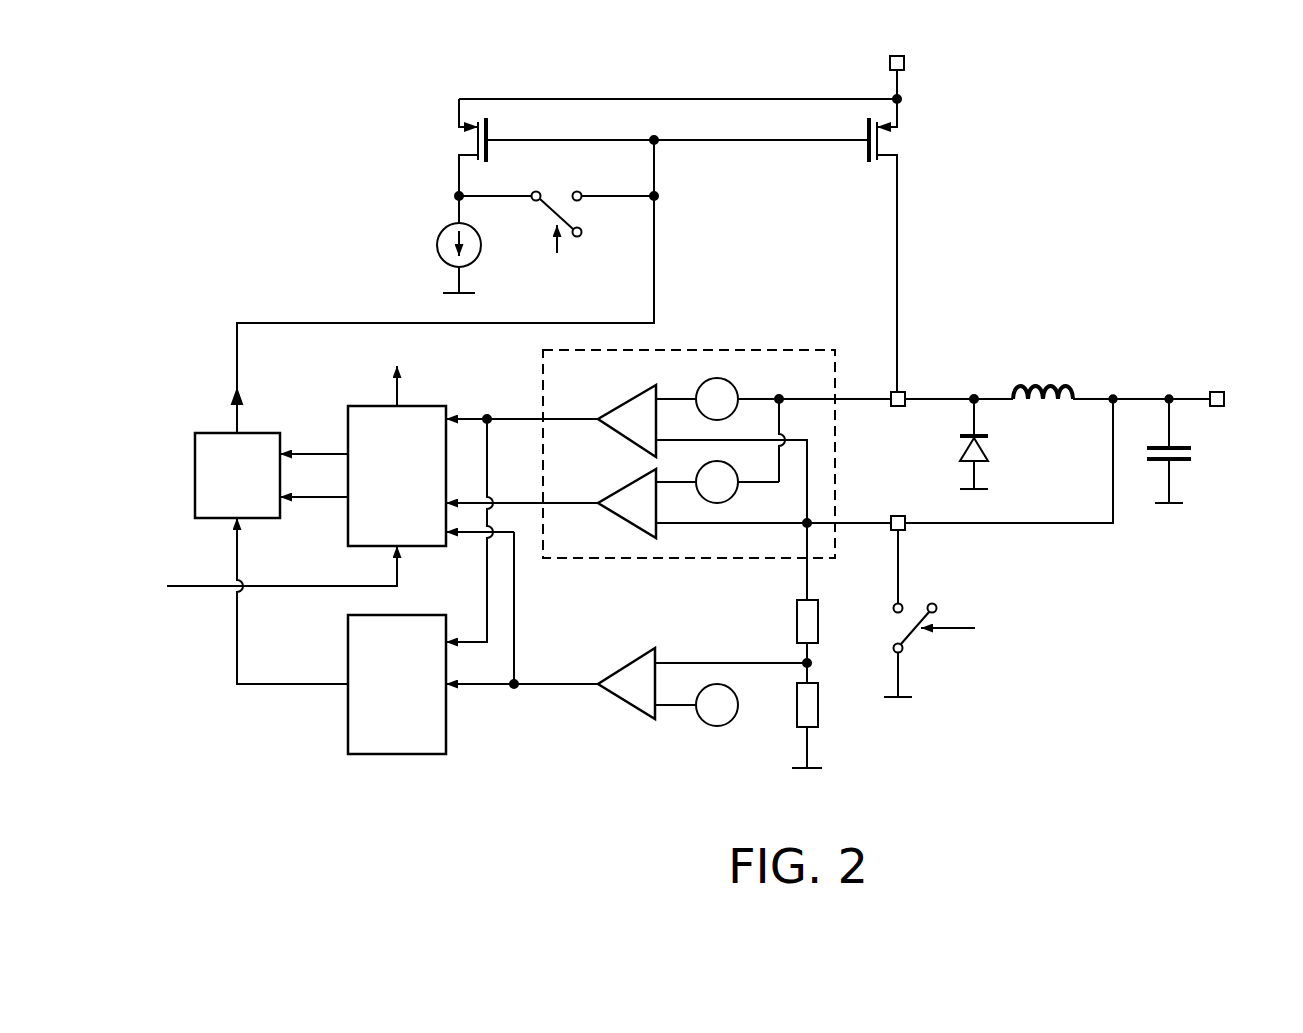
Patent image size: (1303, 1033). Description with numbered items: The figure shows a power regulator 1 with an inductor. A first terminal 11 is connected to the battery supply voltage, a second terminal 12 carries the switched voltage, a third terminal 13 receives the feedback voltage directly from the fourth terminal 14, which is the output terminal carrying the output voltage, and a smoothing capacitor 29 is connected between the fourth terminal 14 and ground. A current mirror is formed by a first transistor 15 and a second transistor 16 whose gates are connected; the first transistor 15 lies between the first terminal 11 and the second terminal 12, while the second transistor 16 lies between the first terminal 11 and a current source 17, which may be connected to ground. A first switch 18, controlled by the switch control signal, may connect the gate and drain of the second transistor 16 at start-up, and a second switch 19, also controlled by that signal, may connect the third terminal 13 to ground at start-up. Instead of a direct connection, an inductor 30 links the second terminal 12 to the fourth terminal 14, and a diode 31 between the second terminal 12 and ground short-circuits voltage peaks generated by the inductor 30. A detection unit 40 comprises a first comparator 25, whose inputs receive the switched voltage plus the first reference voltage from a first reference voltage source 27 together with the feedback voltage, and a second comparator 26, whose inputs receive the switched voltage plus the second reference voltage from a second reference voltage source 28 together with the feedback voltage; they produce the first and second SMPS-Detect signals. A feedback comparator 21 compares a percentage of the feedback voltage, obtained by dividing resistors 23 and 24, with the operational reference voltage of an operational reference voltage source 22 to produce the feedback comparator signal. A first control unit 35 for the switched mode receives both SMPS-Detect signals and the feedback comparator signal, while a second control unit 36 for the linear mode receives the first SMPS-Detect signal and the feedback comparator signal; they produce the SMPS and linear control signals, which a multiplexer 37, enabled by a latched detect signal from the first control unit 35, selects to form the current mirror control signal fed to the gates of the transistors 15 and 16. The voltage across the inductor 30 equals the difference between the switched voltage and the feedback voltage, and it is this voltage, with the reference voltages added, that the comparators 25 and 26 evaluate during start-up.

The power regulator 1 is at (204, 144).
The first terminal 11 is at (904, 70).
The second terminal 12 is at (903, 392).
The third terminal 13 is at (903, 531).
The fourth terminal 14 is at (1212, 392).
The first transistor 15 is at (886, 136).
The second transistor 16 is at (470, 141).
The current source 17 is at (437, 245).
The first switch 18 is at (553, 191).
The second switch 19 is at (893, 629).
The feedback comparator 21 is at (628, 657).
The operational reference voltage source 22 is at (699, 718).
The resistor 23 is at (797, 622).
The resistor 24 is at (818, 705).
The first comparator 25 is at (628, 393).
The second comparator 26 is at (628, 477).
The first reference voltage source 27 is at (698, 412).
The second reference voltage source 28 is at (698, 495).
The smoothing capacitor 29 is at (1192, 455).
The inductor 30 is at (1045, 378).
The diode 31 is at (988, 450).
The first control unit 35 is at (365, 405).
The second control unit 36 is at (348, 736).
The multiplexer 37 is at (195, 475).
The detection unit 40 is at (790, 350).